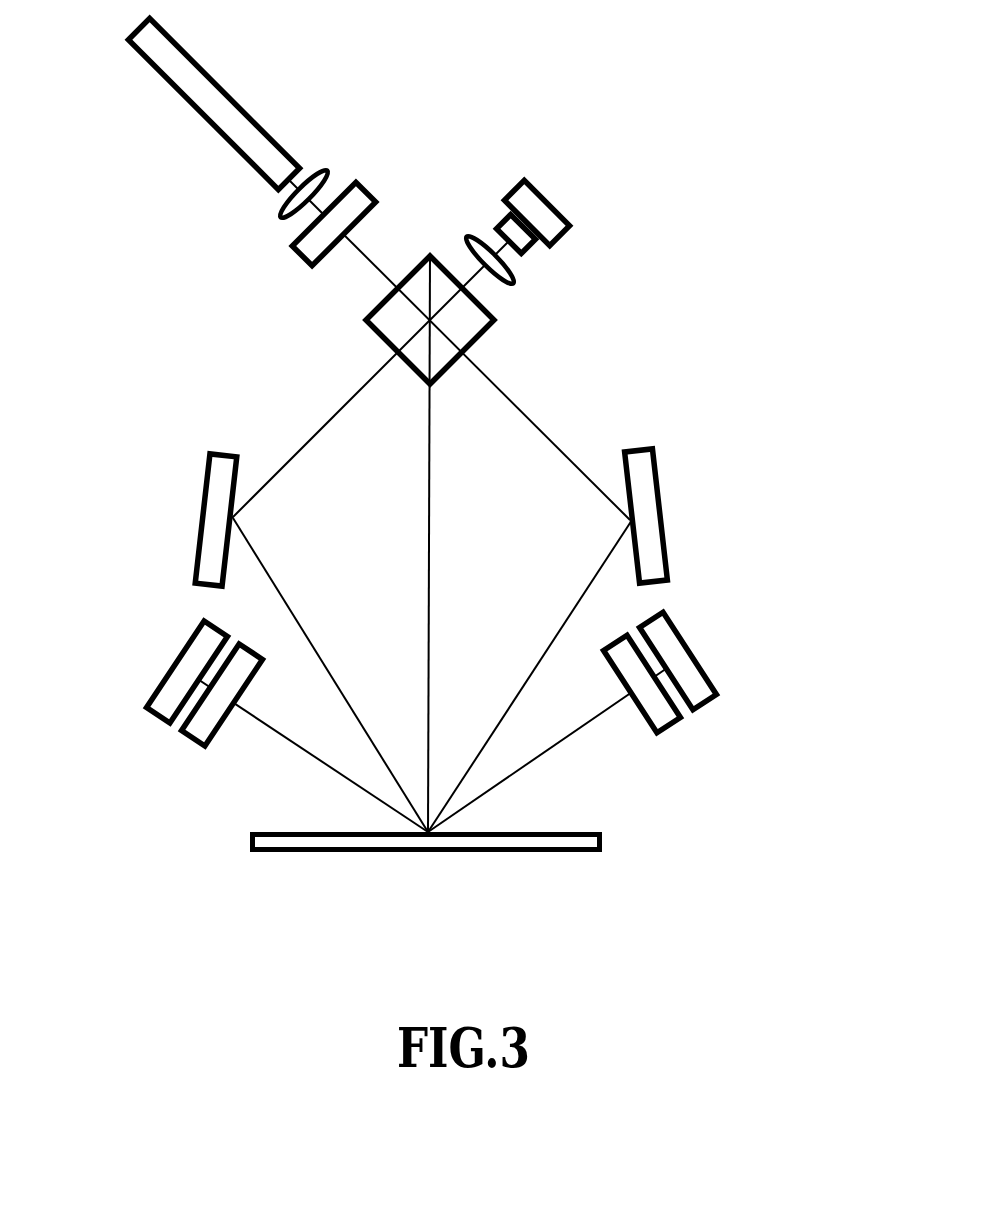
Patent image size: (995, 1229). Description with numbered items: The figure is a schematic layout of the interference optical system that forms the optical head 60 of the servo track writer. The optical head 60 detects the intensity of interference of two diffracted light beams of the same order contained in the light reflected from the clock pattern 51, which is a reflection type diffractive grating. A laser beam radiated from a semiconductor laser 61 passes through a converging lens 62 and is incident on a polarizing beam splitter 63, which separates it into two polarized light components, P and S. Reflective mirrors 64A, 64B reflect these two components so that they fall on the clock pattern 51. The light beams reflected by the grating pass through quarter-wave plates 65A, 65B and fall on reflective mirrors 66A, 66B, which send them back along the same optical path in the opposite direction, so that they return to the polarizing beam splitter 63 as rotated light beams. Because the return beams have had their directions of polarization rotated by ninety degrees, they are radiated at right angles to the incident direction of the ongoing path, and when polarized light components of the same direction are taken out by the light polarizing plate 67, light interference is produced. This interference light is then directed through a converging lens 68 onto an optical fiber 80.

The clock pattern 51 is at (250, 843).
The optical head 60 is at (768, 339).
The semiconductor laser 61 is at (542, 200).
The converging lens 62 is at (515, 278).
The polarizing beam splitter 63 is at (365, 319).
The reflective mirror 64A is at (215, 481).
The reflective mirror 64B is at (660, 495).
The λ/4 plate 65A is at (183, 732).
The λ/4 plate 65B is at (673, 722).
The reflective mirror 66A is at (180, 657).
The reflective mirror 66B is at (712, 675).
The light polarizing plate 67 is at (378, 204).
The converging lens 68 is at (320, 183).
The optical fiber 80 is at (212, 102).